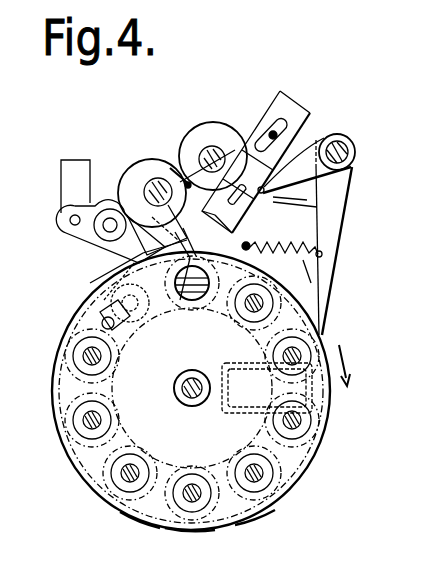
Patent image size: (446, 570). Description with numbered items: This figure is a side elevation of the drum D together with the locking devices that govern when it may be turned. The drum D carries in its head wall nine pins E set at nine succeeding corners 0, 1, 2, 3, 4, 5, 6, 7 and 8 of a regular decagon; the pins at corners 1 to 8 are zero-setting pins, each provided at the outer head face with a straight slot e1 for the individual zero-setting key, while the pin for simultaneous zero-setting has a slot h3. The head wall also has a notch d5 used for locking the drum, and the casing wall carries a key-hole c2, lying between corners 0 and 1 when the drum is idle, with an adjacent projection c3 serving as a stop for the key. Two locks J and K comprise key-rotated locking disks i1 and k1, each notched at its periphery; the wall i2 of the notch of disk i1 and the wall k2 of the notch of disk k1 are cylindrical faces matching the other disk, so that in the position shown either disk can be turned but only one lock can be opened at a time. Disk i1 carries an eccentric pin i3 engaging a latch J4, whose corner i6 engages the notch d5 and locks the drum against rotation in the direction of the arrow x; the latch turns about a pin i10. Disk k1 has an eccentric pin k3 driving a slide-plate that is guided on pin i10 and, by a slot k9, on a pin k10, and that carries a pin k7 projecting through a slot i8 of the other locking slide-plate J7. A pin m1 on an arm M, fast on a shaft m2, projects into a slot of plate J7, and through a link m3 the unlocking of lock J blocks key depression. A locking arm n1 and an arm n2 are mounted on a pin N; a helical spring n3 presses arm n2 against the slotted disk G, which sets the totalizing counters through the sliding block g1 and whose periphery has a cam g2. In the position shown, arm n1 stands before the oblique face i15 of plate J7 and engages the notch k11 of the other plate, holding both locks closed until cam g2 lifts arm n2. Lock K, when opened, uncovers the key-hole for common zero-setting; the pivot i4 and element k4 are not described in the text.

The slotted disk G is at (93, 452).
The drum D is at (128, 507).
The pins E is at (190, 498).
The cam g2 is at (260, 505).
The straight slot e1 is at (137, 478).
The sliding block g1 is at (222, 398).
The corner 0 is at (130, 340).
The corner 1 is at (96, 356).
The corner 2 is at (95, 420).
The corner 3 is at (130, 468).
The corner 4 is at (192, 487).
The corner 5 is at (254, 469).
The corner 6 is at (287, 420).
The corner 7 is at (286, 356).
The corner 8 is at (253, 310).
The notch d5 is at (232, 332).
The slot h3 is at (192, 285).
The corner of the latch i6 is at (177, 285).
The projection c3 is at (115, 328).
The key-hole c2 is at (100, 318).
The link m3 is at (70, 160).
The shaft m2 is at (70, 235).
The arm M is at (122, 243).
The pin m1 is at (90, 283).
The lock J is at (135, 165).
The pivot i4 is at (158, 192).
The latch J4 is at (143, 195).
The locking disk i1 is at (150, 160).
The wall of the notch i2 is at (172, 160).
The excentrically arranged pin i3 is at (140, 185).
The lock K is at (222, 140).
The wall of the notch k2 is at (205, 148).
The excentrically arranged pin k3 is at (196, 160).
The locking disk k1 is at (232, 125).
The slot k9 is at (298, 110).
The locking slide-plate J7 is at (255, 148).
The slot pin k4 is at (282, 100).
The pin k10 is at (305, 125).
The notch k11 is at (352, 178).
The pin i10 is at (245, 208).
The pin N is at (355, 152).
The locking arm n1 is at (322, 137).
The helical spring n3 is at (324, 300).
The arm n2 is at (321, 333).
The arrow x is at (352, 365).
The oblique face i15 is at (310, 202).
The slot i8 is at (318, 220).
The pin k7 is at (282, 247).